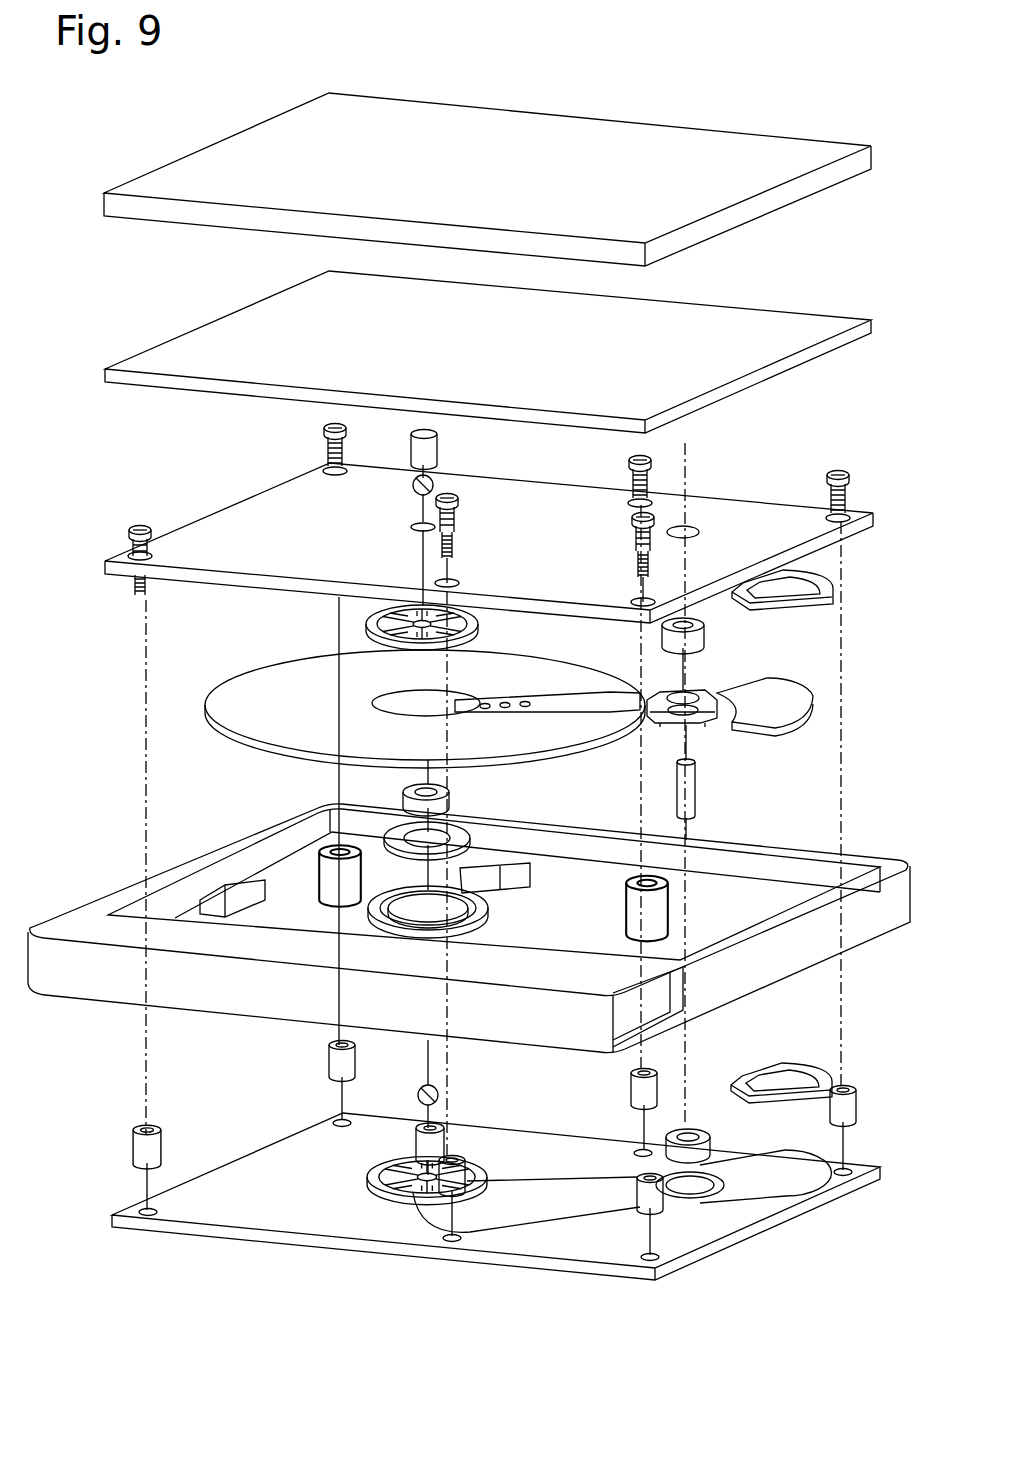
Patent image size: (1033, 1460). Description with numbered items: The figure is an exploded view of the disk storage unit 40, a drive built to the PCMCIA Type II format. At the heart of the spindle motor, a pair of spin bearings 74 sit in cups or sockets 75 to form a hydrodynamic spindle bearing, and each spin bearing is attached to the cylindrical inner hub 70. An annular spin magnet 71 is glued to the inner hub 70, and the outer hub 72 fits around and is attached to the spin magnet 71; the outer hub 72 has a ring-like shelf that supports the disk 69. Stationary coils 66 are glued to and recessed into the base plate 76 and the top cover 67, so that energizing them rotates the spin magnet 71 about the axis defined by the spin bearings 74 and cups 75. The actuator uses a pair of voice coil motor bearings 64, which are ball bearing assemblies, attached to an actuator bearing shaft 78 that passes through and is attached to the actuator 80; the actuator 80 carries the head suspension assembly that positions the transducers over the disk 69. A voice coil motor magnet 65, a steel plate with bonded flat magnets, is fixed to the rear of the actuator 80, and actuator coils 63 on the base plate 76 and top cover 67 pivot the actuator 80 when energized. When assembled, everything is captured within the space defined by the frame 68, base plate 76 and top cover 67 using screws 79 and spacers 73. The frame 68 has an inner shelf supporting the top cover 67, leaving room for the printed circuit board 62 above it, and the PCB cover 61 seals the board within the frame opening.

The disk storage unit 40 is at (725, 110).
The PCB cover 61 is at (215, 228).
The printed circuit board 62 is at (213, 395).
The actuator coils 63 is at (823, 582).
The voice coil motor bearings 64 is at (703, 632).
The voice coil motor magnet 65 is at (753, 678).
The stationary coils 66 is at (483, 628).
The top cover 67 is at (263, 588).
The frame 68 is at (268, 1017).
The disk 69 is at (262, 748).
The inner hub 70 is at (451, 790).
The spin magnet 71 is at (475, 835).
The outer hub 72 is at (490, 913).
The spacers 73 is at (327, 1068).
The spin bearings 74 is at (433, 482).
The bearing cups 75 is at (438, 443).
The base plate 76 is at (225, 1238).
The actuator bearing shaft 78 is at (695, 796).
The screws 79 is at (850, 473).
The actuator 80 is at (692, 720).